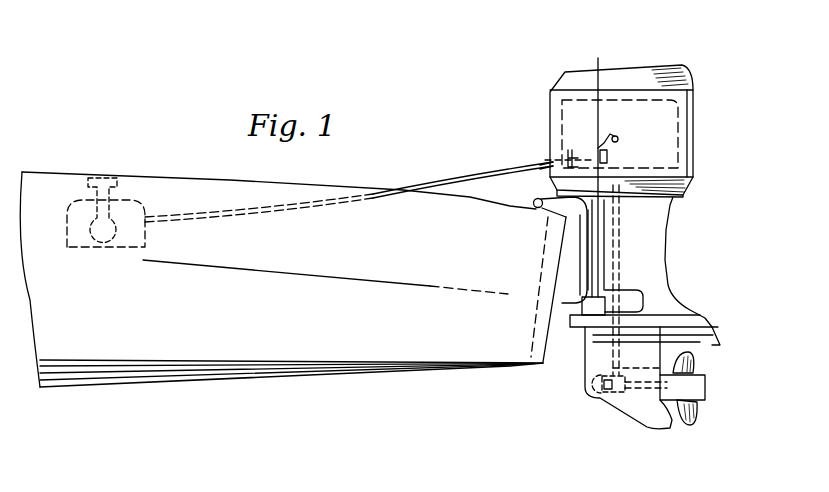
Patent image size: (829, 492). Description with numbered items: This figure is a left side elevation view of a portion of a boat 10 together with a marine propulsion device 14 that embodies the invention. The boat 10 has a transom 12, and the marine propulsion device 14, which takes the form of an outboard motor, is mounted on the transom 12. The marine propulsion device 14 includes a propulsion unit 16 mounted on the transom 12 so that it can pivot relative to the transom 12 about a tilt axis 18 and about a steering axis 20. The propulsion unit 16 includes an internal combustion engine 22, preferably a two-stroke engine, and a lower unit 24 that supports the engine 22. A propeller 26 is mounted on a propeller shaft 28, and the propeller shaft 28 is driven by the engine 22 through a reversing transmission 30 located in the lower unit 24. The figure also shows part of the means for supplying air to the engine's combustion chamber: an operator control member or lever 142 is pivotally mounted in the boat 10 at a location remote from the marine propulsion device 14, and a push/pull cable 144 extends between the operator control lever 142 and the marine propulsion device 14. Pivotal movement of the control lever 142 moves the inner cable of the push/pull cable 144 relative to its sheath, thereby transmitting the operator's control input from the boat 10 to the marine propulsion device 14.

The boat 10 is at (81, 169).
The transom 12 is at (550, 249).
The marine propulsion device 14 is at (700, 58).
The propulsion unit 16 is at (661, 119).
The tilt axis 18 is at (534, 209).
The steering axis 20 is at (598, 59).
The internal combustion engine 22 is at (581, 147).
The lower unit 24 is at (668, 302).
The propeller 26 is at (692, 366).
The propeller shaft 28 is at (642, 387).
The reversing transmission 30 is at (594, 396).
The operator control lever 142 is at (115, 248).
The push/pull cable 144 is at (288, 212).